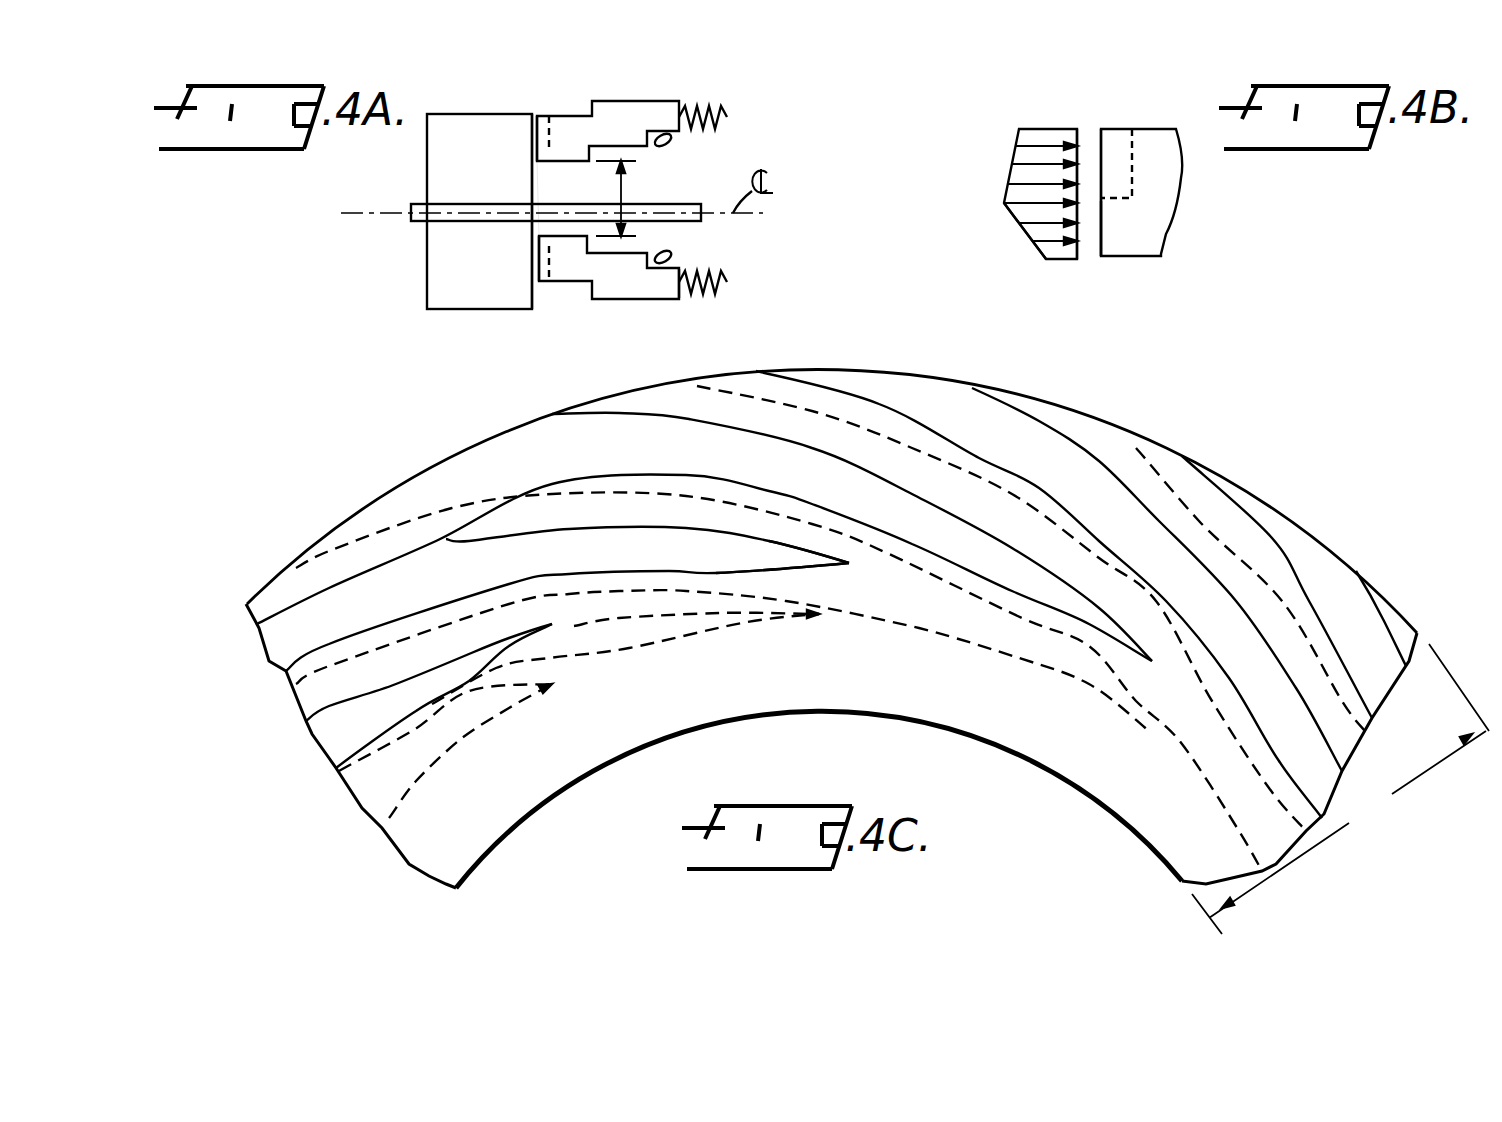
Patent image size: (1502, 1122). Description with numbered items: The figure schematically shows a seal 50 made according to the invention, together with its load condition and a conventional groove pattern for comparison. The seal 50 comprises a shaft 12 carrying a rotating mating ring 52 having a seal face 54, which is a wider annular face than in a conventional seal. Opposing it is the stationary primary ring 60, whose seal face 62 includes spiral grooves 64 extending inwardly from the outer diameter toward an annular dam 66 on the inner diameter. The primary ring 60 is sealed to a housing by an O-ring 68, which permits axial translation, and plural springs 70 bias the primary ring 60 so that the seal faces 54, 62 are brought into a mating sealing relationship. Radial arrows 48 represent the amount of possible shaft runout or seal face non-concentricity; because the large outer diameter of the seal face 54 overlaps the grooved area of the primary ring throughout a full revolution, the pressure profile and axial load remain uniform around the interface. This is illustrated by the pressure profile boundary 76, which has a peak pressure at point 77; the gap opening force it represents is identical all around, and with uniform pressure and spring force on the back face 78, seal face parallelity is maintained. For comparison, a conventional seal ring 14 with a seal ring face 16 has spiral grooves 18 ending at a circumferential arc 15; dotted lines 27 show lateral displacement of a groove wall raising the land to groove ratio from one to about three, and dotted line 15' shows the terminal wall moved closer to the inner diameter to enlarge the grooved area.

In FIG. 4A, the shaft 12 is at (421, 222).
In FIG. 4C, the seal ring 14 is at (1391, 600).
In FIG. 4C, the circumferential arc 15 is at (805, 609).
In FIG. 4C, the dotted line 15' is at (686, 714).
In FIG. 4C, the seal ring face 16 is at (1340, 789).
In FIG. 4C, the spiral grooves 18 is at (500, 450).
In FIG. 4C, the dotted lines 27 is at (343, 545).
In FIG. 4A, the radial arrows 48 is at (623, 212).
In FIG. 4A, the seal 50 is at (533, 328).
In FIG. 4A, the rotating mating ring 52 is at (465, 92).
In FIG. 4A, the seal face 54 is at (534, 183).
In FIG. 4B, the seal face 54 is at (1083, 150).
In FIG. 4A, the primary ring 60 is at (642, 100).
In FIG. 4B, the primary ring 60 is at (1160, 136).
In FIG. 4A, the seal face 62 is at (534, 268).
In FIG. 4B, the seal face 62 is at (1102, 218).
In FIG. 4A, the spiral grooves 64 is at (546, 115).
In FIG. 4B, the spiral grooves 64 is at (1120, 133).
In FIG. 4A, the annular dam 66 is at (536, 152).
In FIG. 4B, the annular dam 66 is at (1098, 241).
In FIG. 4A, the O-ring 68 is at (668, 142).
In FIG. 4A, the springs 70 is at (729, 113).
In FIG. 4B, the pressure profile boundary 76 is at (1018, 150).
In FIG. 4B, the point 77 is at (1005, 203).
In FIG. 4A, the back face 78 is at (684, 294).